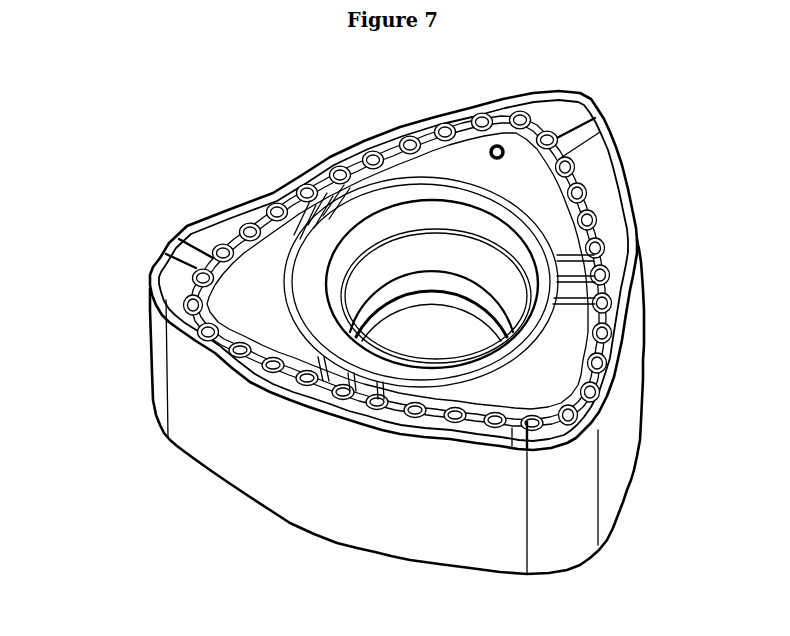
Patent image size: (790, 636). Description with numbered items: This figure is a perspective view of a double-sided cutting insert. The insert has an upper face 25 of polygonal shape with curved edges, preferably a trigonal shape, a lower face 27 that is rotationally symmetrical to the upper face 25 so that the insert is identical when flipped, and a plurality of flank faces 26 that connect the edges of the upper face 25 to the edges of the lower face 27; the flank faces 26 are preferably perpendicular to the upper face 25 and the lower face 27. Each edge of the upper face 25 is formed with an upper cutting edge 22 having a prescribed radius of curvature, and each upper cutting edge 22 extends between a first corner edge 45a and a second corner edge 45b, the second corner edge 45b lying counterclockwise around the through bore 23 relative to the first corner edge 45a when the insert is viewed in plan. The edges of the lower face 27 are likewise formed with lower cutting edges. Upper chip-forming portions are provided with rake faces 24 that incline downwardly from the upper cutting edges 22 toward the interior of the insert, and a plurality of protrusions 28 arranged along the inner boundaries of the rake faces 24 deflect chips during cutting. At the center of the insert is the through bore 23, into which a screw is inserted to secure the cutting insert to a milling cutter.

The upper cutting edge 22 is at (218, 372).
The through bore 23 is at (434, 249).
The rake face 24 is at (263, 196).
The upper face 25 is at (567, 347).
The flank face 26 is at (187, 413).
The lower face 27 is at (274, 511).
The protrusion 28 is at (306, 186).
The first corner edge 45a is at (150, 282).
The second corner edge 45b is at (565, 448).